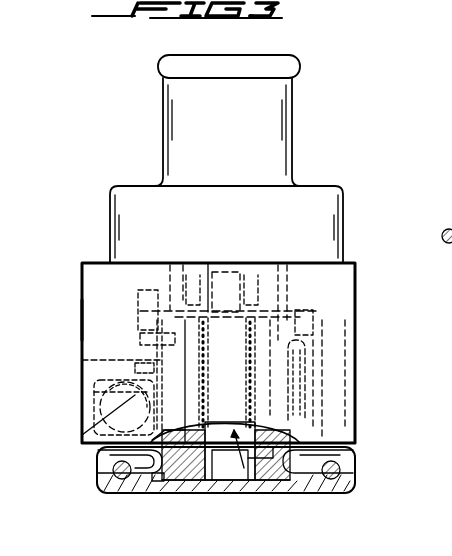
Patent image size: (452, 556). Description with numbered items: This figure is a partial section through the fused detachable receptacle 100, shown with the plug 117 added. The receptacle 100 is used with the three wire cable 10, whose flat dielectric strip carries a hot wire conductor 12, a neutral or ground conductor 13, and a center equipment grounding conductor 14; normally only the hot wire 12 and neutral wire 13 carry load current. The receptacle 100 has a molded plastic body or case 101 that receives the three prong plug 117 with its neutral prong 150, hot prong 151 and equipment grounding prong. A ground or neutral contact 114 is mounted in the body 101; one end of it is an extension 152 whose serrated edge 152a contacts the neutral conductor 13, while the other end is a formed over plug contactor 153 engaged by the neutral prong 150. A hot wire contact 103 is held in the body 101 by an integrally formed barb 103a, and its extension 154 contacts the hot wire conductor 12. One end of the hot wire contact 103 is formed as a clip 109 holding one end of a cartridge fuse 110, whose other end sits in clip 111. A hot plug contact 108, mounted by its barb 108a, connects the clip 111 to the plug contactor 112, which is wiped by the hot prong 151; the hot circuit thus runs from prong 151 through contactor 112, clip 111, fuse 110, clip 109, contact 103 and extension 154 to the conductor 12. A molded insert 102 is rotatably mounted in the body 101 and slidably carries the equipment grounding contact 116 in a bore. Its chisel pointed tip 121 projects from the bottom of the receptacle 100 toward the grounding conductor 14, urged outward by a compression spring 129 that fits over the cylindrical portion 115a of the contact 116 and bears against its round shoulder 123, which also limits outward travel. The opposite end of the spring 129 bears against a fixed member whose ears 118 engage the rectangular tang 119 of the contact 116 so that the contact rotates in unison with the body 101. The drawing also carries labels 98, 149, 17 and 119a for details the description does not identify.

The fused detachable receptacle 100 is at (81, 318).
The body or case 101 is at (357, 291).
The three prong plug 117 is at (296, 118).
The rectangular tang 119 is at (213, 265).
The hot prong 151 is at (176, 275).
The ears 118 is at (196, 302).
The ground or neutral prong 150 is at (285, 274).
The compression spring 129 is at (255, 330).
The integrally formed barb 108a is at (136, 328).
The hot plug contact 108 is at (152, 341).
The plug contactor 112 is at (170, 352).
The ground or neutral contact 114 is at (305, 338).
The formed over plug contactor 153 is at (288, 373).
The stem guide rod 119a is at (304, 385).
The cylindrical portion 115a is at (236, 342).
The hot wire contact 103 is at (135, 371).
The integrally formed barb 103a is at (107, 392).
The clip 109 is at (100, 402).
The clip 111 is at (108, 412).
The cartridge fuse 110 is at (95, 432).
The seal ring 98 is at (150, 405).
The dome cover 149 is at (274, 413).
The extension 154 is at (108, 456).
The hot wire conductor 12 is at (100, 482).
The three wire cable 10 is at (125, 478).
The round shoulder 123 is at (152, 480).
The insert 102 is at (180, 482).
The left clamp block 17 is at (205, 478).
The chisel pointed tip 121 is at (240, 482).
The equipment grounding wire 14 is at (256, 478).
The equipment grounding contact 116 is at (265, 480).
The extension 152 is at (292, 480).
The serrated edge 152a is at (344, 468).
The neutral or ground conductor 13 is at (325, 494).